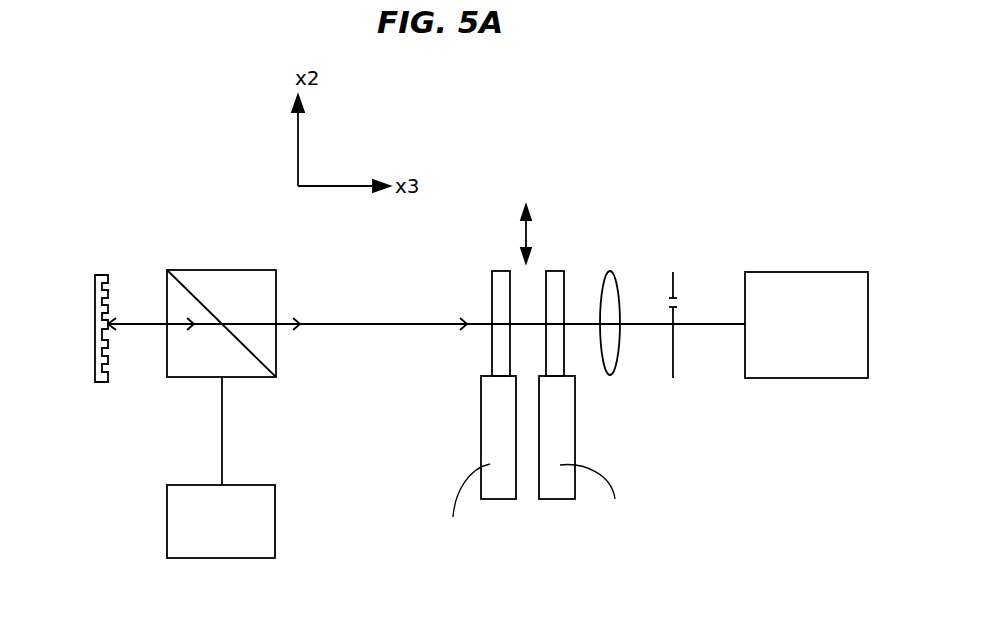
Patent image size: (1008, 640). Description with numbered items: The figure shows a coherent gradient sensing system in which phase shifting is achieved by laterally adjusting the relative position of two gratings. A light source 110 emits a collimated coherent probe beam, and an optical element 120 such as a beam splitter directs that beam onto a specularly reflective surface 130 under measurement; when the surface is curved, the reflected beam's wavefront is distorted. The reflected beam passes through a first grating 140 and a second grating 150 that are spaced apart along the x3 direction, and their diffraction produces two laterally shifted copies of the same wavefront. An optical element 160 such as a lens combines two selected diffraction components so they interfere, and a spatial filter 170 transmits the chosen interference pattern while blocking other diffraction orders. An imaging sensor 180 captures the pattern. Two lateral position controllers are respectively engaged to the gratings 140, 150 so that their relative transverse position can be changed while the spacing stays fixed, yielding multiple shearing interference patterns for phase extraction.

The light source 110 is at (167, 520).
The optical element 120 is at (222, 270).
The specularly reflective surface 130 is at (92, 372).
The first grating 140 is at (502, 270).
The second grating 150 is at (555, 270).
The optical element 160 is at (613, 376).
The spatial filter 170 is at (676, 283).
The imaging sensor 180 is at (800, 272).